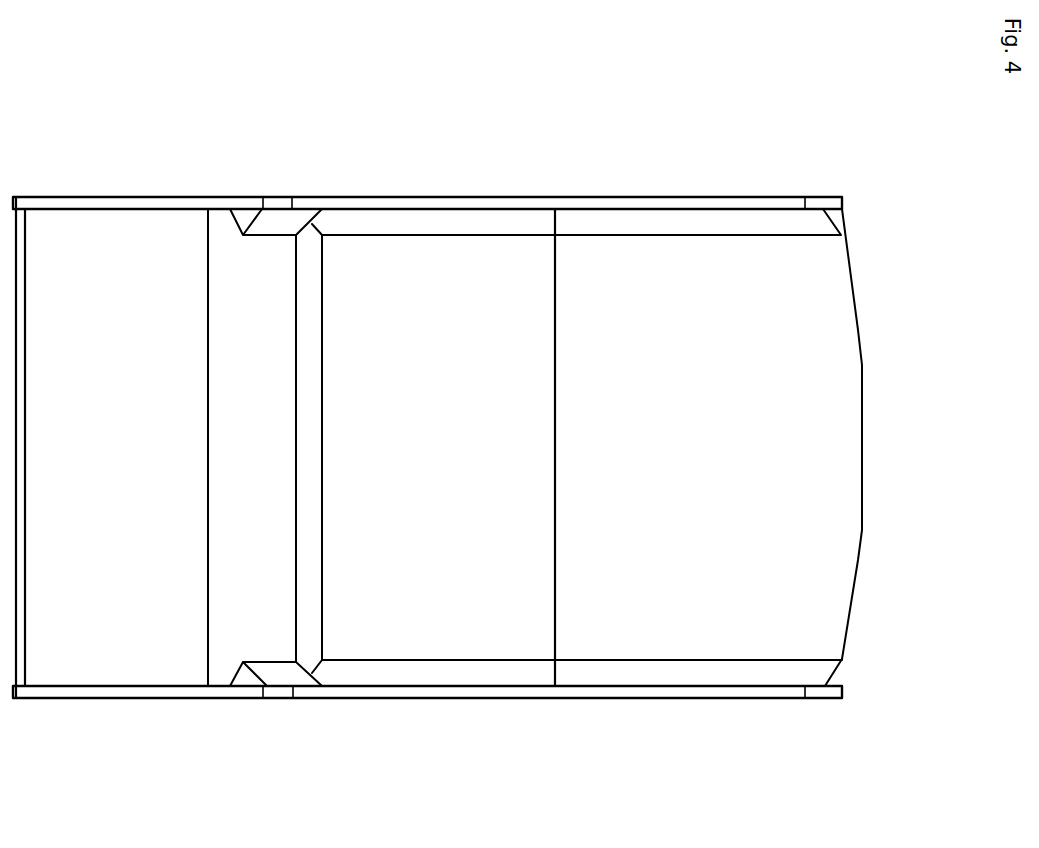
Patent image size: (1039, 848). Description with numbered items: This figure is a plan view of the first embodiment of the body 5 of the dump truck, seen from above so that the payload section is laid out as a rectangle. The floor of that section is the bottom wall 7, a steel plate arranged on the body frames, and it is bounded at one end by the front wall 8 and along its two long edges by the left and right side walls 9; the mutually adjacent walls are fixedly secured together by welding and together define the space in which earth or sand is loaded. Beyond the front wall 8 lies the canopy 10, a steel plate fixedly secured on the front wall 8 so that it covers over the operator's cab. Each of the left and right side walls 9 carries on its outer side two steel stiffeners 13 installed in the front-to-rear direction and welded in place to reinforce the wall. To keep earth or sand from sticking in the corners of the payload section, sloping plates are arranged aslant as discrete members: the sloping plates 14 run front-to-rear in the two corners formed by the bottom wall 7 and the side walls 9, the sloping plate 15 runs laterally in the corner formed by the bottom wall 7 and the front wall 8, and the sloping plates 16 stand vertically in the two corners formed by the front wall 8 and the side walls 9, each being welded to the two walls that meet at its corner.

The body 5 is at (777, 197).
The bottom wall 7 is at (778, 434).
The front wall 8 is at (233, 258).
The side walls 9 is at (593, 208).
The canopy 10 is at (117, 240).
The stiffeners 13 is at (485, 197).
The sloping plates 14 is at (410, 215).
The sloping plate 15 is at (307, 607).
The sloping plates 16 is at (278, 222).